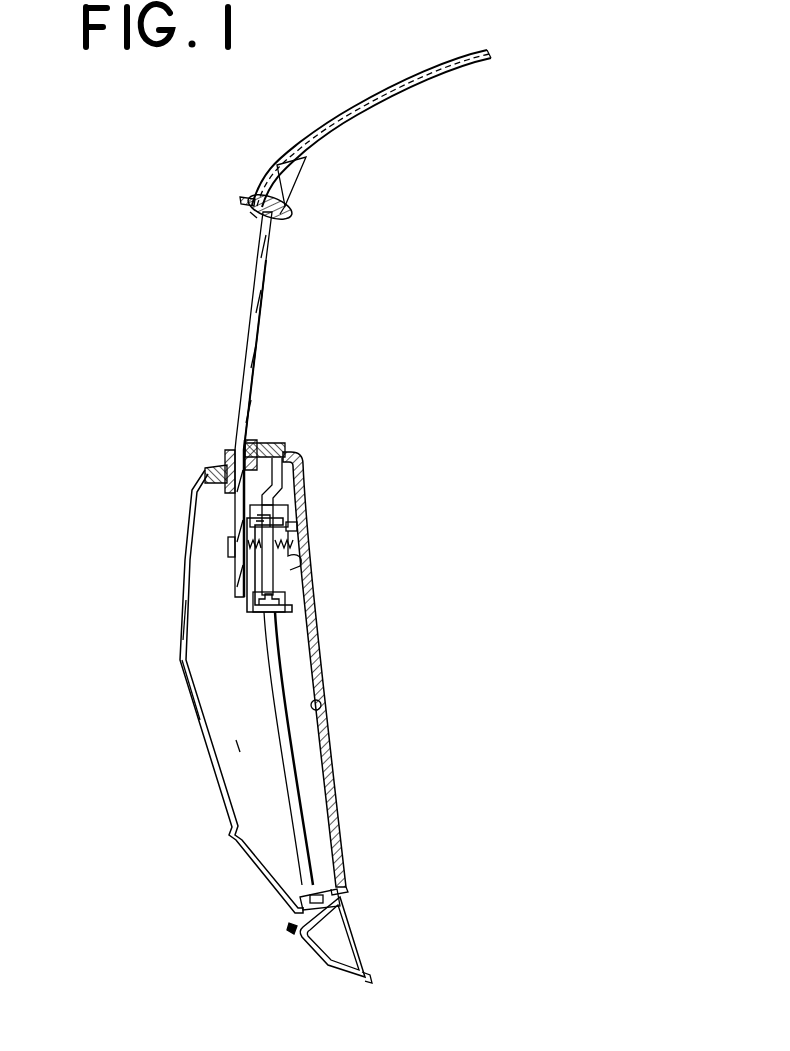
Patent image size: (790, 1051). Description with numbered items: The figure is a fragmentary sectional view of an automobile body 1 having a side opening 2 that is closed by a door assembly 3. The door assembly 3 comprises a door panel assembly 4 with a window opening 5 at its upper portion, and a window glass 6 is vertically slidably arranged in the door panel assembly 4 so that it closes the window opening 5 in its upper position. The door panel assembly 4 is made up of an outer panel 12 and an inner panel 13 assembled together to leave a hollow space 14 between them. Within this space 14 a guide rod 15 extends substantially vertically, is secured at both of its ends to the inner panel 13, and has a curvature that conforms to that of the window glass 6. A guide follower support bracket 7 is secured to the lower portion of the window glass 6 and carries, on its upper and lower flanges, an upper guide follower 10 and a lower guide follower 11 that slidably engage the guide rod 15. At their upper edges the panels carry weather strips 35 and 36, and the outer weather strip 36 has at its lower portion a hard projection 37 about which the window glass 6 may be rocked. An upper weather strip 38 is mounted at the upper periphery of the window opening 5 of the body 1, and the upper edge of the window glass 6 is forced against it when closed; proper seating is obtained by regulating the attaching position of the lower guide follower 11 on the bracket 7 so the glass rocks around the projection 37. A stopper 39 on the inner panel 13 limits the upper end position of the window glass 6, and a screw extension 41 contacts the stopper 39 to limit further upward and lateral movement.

The body 1 is at (405, 82).
The side opening 2 is at (292, 927).
The door assembly 3 is at (179, 637).
The door panel assembly 4 is at (178, 553).
The window opening 5 is at (256, 224).
The window glass 6 is at (257, 283).
The guide follower support bracket 7 is at (256, 565).
The upper guide follower 10 is at (290, 514).
The lower guide follower 11 is at (286, 602).
The outer panel 12 is at (179, 663).
The inner panel 13 is at (321, 704).
The hollow space 14 is at (240, 733).
The guide rod 15 is at (291, 770).
The weather strip 35 is at (256, 452).
The outer weather strip 36 is at (228, 456).
The hard projection 37 is at (204, 483).
The upper weather strip 38 is at (292, 220).
The stopper 39 is at (301, 565).
The screw extension 41 is at (297, 527).